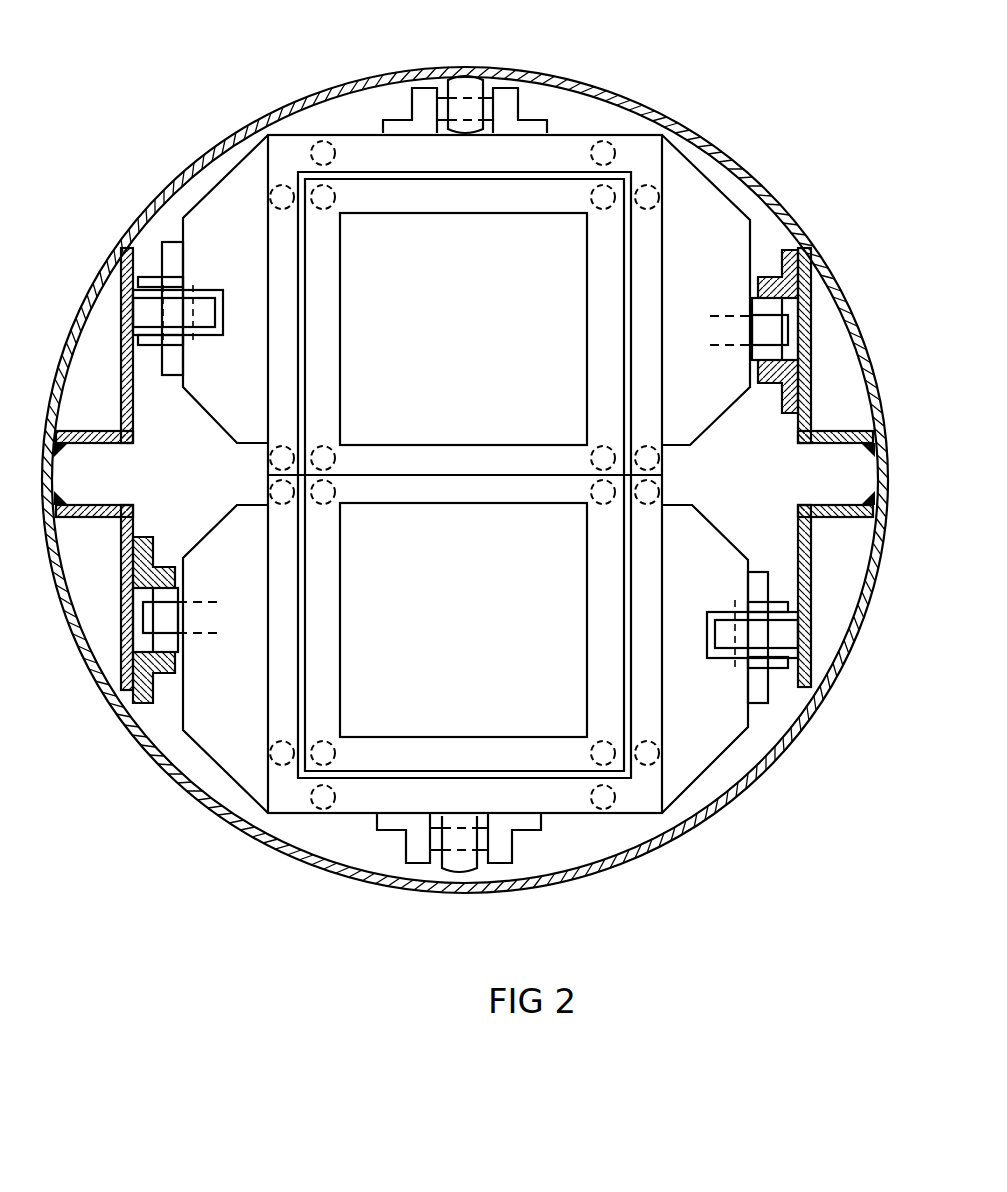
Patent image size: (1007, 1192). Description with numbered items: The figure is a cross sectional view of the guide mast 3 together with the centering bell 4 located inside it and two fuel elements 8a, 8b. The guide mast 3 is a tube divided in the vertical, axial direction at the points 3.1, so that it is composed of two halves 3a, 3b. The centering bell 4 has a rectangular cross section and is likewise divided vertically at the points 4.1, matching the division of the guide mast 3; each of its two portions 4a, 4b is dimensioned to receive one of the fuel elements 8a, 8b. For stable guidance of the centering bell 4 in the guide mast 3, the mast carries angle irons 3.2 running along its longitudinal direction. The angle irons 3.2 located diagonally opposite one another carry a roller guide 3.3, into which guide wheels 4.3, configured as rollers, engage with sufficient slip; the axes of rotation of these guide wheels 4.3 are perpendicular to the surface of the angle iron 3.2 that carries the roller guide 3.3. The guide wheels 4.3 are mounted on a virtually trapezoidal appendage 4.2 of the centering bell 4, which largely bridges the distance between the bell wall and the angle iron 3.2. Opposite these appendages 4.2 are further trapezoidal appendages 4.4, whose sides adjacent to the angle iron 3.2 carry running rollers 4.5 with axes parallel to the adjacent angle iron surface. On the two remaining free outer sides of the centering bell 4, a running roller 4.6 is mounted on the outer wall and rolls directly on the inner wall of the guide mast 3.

The guide mast 3 is at (133, 760).
The half of the guide mast tube 3a is at (130, 232).
The half of the guide mast tube 3b is at (193, 790).
The division points of the guide mast 3.1 is at (46, 462).
The angle iron 3.2 is at (126, 305).
The roller guide 3.3 is at (785, 253).
The centering bell 4 is at (308, 828).
The portion of the centering bell 4a is at (288, 158).
The portion of the centering bell 4b is at (365, 797).
The division points of the centering bell 4.1 is at (275, 488).
The virtually trapezoidal appendage 4.2 is at (702, 205).
The guide wheel 4.3 is at (770, 308).
The trapezoidal appendage 4.4 is at (240, 207).
The running roller 4.5 is at (175, 307).
The running roller 4.6 is at (463, 88).
The fuel element 8a is at (560, 200).
The fuel element 8b is at (567, 758).